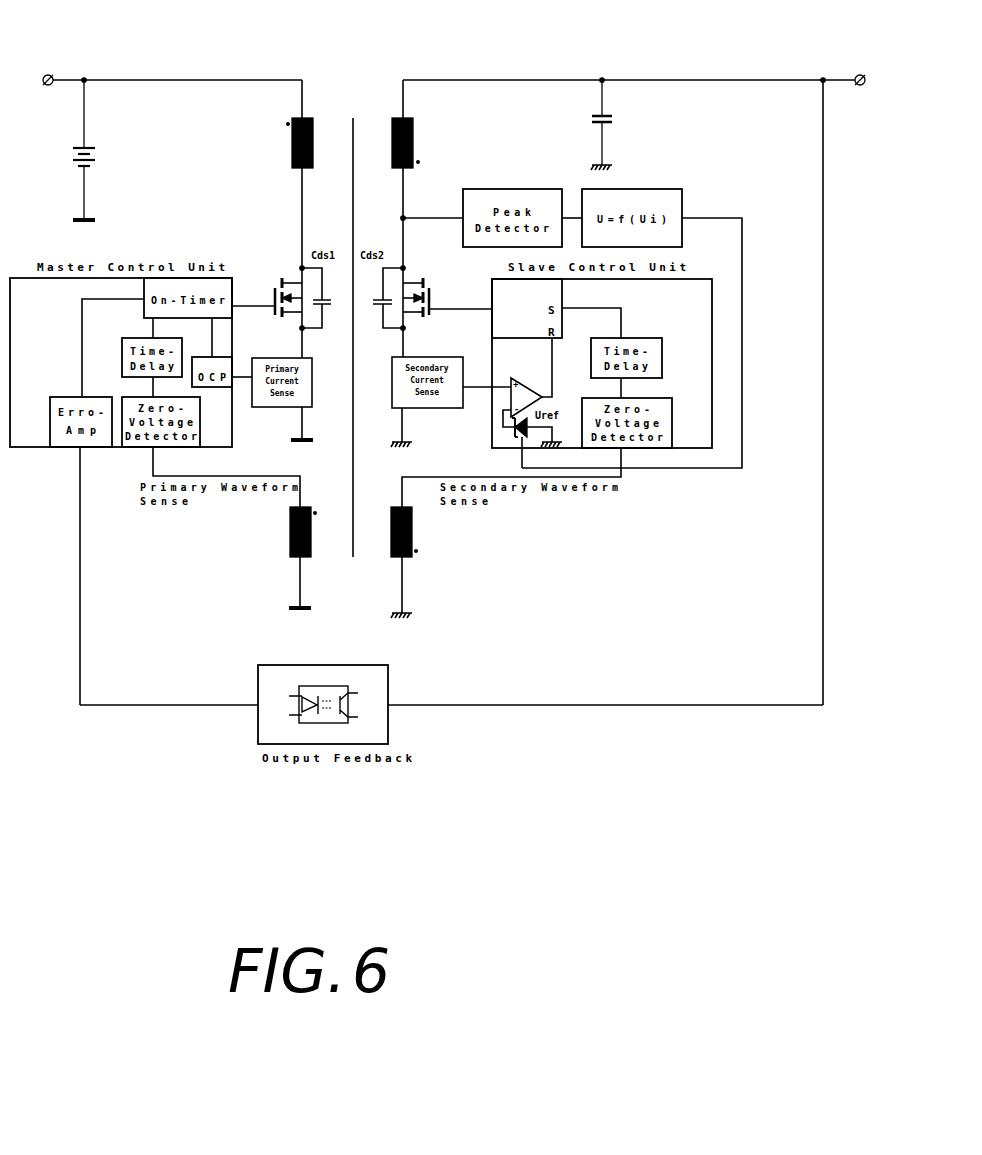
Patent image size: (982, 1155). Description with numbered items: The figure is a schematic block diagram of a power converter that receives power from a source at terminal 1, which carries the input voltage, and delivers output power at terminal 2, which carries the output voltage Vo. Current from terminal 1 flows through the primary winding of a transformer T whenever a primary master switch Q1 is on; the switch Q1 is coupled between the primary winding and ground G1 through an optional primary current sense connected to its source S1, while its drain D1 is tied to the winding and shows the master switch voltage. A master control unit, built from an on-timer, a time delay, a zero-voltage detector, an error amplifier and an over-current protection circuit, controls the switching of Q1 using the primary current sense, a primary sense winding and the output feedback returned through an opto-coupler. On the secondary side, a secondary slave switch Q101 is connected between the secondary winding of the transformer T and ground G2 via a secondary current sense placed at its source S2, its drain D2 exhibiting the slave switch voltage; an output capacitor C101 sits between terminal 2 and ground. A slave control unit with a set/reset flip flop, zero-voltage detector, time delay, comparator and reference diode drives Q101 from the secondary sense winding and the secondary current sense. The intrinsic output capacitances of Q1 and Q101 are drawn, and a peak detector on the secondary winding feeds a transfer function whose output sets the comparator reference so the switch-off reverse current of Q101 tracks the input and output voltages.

The terminal 1 is at (121, 80).
The terminal 2 is at (741, 80).
The transformer T is at (333, 98).
The primary master switch Q1 is at (267, 291).
The drain D1 is at (274, 280).
The ground G1 is at (253, 301).
The source S1 is at (279, 322).
The secondary slave switch Q101 is at (447, 290).
The drain D2 is at (426, 283).
The ground G2 is at (460, 301).
The source S2 is at (426, 322).
The output capacitor C101 is at (614, 125).